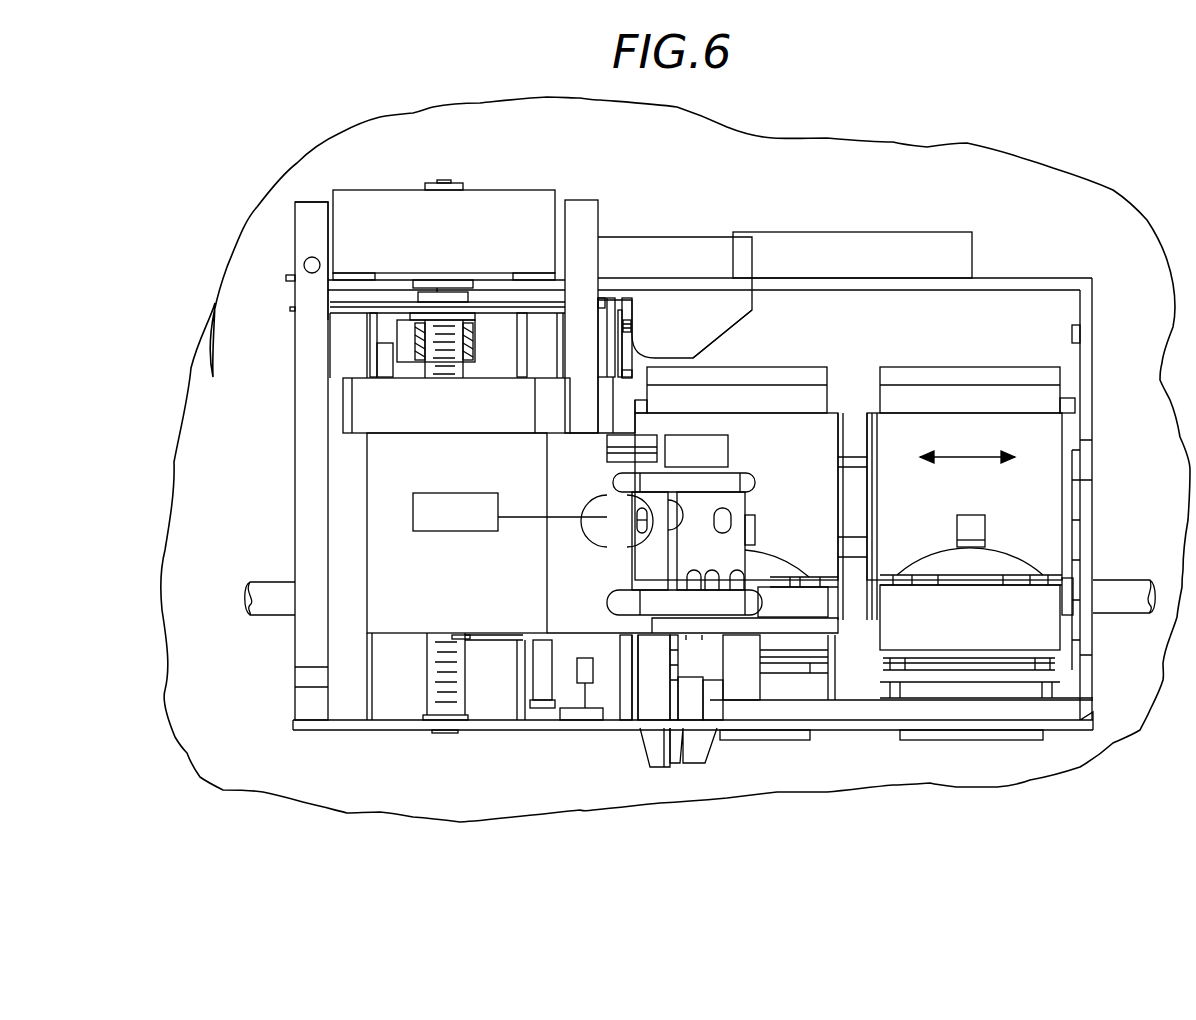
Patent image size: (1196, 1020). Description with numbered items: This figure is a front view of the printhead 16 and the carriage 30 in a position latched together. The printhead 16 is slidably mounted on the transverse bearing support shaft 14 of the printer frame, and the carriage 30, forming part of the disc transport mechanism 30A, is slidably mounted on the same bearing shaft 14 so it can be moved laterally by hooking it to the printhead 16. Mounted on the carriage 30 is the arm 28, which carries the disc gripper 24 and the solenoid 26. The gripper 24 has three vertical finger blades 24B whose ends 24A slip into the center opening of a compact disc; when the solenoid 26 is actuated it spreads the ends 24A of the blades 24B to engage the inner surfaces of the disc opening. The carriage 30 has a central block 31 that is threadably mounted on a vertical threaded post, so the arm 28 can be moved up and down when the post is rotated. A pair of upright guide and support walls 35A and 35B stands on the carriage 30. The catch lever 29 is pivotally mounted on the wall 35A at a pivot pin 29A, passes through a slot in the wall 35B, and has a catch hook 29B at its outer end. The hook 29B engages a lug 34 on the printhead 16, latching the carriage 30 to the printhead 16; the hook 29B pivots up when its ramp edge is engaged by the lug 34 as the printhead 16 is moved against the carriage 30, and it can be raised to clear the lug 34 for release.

The bearing support shaft 14 is at (1118, 598).
The printhead 16 is at (920, 376).
The disc gripper 24 is at (755, 510).
The gripper blade ends 24A is at (653, 752).
The finger blades 24B is at (657, 697).
The solenoid 26 is at (450, 490).
The arm 28 is at (555, 597).
The catch lever 29 is at (692, 253).
The pivot pin 29A is at (304, 254).
The catch hook 29B is at (705, 320).
The carriage 30 is at (306, 458).
The disc transport mechanism 30A is at (316, 512).
The central block 31 is at (470, 340).
The lug 34 is at (626, 298).
The upright guide wall 35A is at (312, 205).
The upright guide wall 35B is at (578, 200).